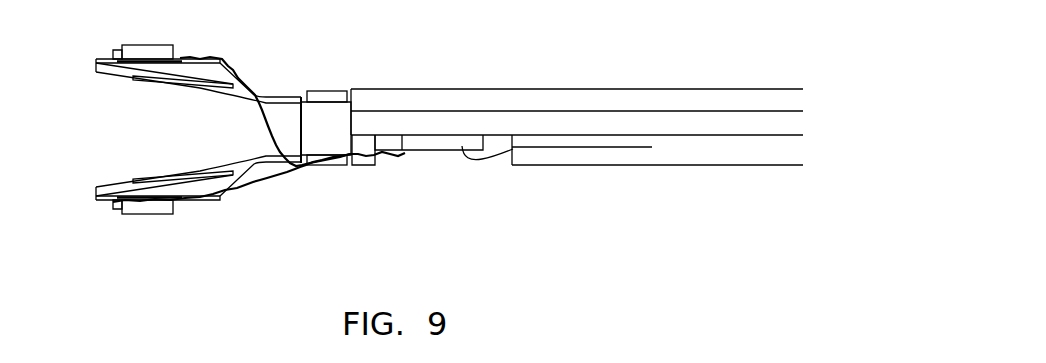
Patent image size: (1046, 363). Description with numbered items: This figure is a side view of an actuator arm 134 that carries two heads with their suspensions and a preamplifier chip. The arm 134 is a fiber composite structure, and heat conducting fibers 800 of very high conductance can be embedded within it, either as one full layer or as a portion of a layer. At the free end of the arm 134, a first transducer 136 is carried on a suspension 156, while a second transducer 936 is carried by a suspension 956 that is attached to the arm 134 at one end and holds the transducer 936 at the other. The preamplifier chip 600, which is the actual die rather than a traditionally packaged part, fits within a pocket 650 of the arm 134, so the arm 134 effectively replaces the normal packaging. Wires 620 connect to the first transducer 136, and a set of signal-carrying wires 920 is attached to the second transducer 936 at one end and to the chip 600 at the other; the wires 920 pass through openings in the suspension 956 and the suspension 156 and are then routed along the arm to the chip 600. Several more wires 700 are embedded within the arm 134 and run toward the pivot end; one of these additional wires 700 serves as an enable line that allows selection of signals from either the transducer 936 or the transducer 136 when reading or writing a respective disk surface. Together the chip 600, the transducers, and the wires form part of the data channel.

The arm 134 is at (645, 98).
The first transducer 136 is at (118, 213).
The suspension 156 is at (175, 168).
The chip 600 is at (433, 143).
The wires 620 is at (270, 185).
The pocket 650 is at (512, 160).
The wires 700 is at (627, 147).
The heat conducting fibers 800 is at (570, 118).
The signal-carrying wires 920 is at (245, 75).
The second transducer 936 is at (122, 46).
The suspension 956 is at (162, 86).